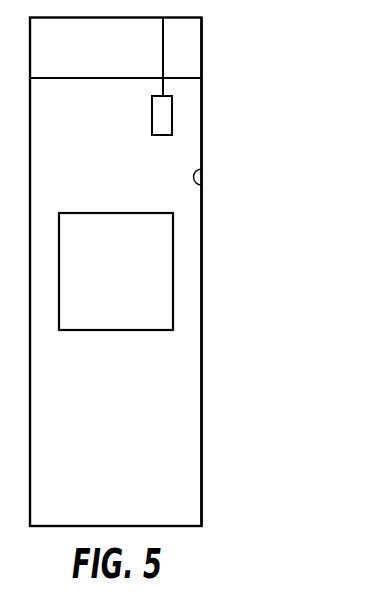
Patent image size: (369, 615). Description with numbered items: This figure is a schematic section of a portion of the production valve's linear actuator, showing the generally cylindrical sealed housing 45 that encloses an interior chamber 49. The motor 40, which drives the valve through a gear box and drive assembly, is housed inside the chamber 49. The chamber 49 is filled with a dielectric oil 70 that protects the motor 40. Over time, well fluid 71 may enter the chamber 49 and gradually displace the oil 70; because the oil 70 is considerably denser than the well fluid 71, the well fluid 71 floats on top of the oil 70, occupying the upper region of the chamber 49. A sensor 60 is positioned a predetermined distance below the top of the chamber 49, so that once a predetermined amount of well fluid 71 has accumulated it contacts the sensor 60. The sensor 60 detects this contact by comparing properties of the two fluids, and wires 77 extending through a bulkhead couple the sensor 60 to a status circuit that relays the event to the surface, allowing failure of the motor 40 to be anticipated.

The motor 40 is at (173, 273).
The sealed housing 45 is at (202, 215).
The interior chamber 49 is at (202, 168).
The sensor 60 is at (173, 112).
The oil 70 is at (87, 123).
The well fluid 71 is at (125, 65).
The wires 77 is at (163, 55).